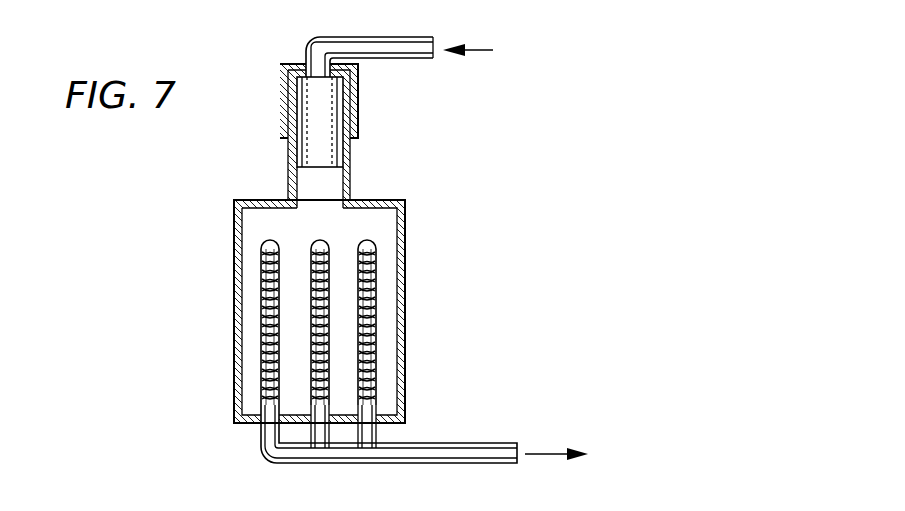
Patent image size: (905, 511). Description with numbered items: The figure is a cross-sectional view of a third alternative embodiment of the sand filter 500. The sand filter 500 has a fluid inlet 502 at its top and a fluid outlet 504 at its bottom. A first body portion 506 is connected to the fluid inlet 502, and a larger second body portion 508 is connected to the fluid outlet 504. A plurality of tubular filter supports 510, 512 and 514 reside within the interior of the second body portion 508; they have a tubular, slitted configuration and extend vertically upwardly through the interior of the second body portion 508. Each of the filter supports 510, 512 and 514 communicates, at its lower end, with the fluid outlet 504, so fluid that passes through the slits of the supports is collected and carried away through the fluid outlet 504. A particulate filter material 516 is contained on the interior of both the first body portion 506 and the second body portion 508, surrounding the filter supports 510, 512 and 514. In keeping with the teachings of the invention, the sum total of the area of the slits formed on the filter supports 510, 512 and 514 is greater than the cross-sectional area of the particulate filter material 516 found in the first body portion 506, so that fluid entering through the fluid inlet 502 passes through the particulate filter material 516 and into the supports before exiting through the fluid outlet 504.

The sand filter 500 is at (465, 246).
The fluid inlet 502 is at (309, 46).
The fluid outlet 504 is at (480, 443).
The first body portion 506 is at (352, 148).
The second body portion 508 is at (405, 320).
The tubular filter support 510 is at (265, 310).
The tubular filter support 512 is at (308, 245).
The tubular filter support 514 is at (377, 348).
The particulate filter material 516 is at (407, 208).